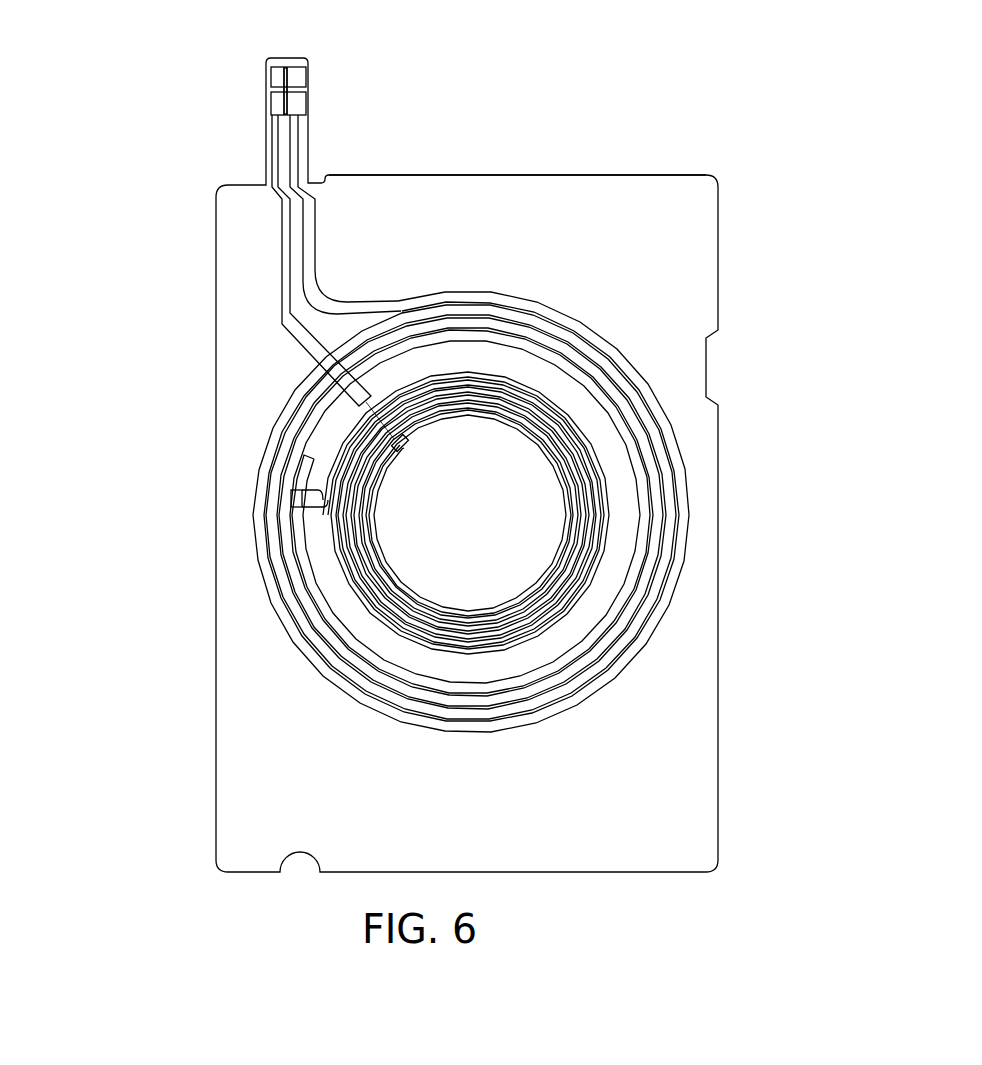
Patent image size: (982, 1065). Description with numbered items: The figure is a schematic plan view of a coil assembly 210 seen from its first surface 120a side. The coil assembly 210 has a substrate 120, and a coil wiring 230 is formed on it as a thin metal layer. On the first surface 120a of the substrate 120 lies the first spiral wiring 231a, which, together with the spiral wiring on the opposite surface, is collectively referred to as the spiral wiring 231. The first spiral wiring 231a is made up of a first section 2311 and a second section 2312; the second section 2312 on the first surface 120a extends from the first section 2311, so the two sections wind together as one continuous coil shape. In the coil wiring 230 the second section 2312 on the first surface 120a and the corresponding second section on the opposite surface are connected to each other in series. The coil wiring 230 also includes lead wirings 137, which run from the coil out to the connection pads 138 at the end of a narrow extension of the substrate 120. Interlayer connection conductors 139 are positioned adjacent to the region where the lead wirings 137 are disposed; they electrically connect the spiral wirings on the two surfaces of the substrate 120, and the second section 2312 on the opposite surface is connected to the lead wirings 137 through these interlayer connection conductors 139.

The coil assembly 210 is at (580, 37).
The substrate 120 is at (728, 244).
The first surface 120a is at (592, 185).
The lead wirings 137 is at (282, 260).
The connection pads 138 is at (282, 105).
The interlayer connection conductors 139 is at (292, 500).
The coil wiring 230 is at (417, 282).
The spiral wiring 231 is at (113, 558).
The first spiral wiring 231a is at (363, 512).
The first section 2311 is at (275, 562).
The second section 2312 is at (347, 580).